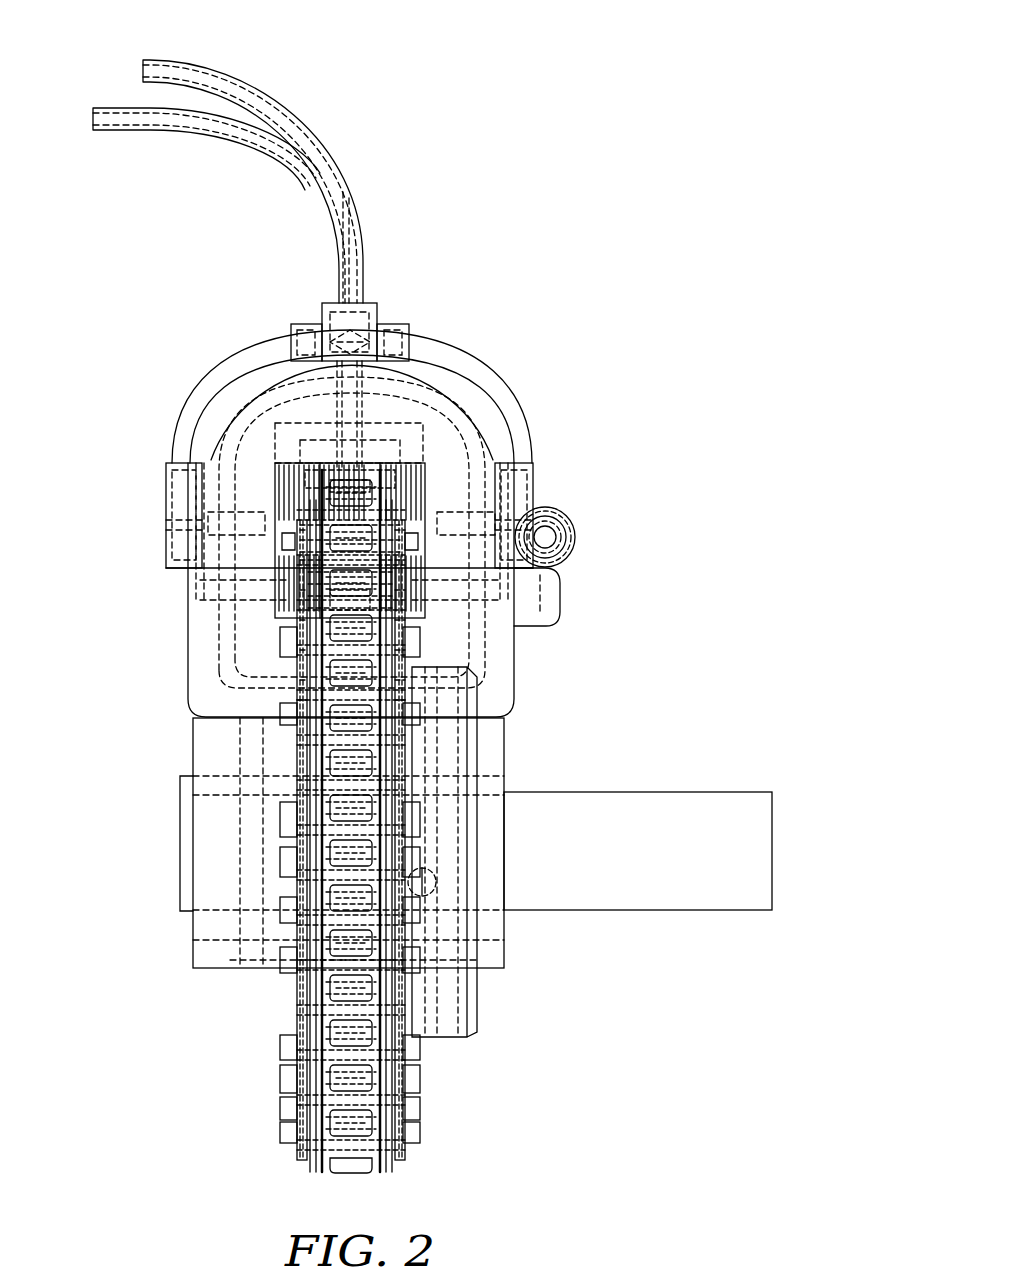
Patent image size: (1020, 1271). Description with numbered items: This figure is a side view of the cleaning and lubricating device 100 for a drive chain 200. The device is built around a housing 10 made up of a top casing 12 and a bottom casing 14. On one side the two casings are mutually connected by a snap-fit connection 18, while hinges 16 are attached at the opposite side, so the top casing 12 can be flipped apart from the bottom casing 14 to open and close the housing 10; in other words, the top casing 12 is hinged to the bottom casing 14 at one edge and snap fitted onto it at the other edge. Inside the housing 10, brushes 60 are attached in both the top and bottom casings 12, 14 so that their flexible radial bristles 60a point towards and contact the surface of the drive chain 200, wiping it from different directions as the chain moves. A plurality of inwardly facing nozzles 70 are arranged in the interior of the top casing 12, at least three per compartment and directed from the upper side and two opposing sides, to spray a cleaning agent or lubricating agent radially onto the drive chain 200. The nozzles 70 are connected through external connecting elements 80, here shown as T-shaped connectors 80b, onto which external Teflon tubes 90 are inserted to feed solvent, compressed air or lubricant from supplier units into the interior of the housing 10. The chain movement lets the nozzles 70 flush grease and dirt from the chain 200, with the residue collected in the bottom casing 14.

The cleaning and lubricating device 100 is at (505, 195).
The external tubes 90 is at (258, 352).
The external connecting elements 80 is at (372, 312).
The T-shaped connector 80b is at (533, 487).
The top casing 12 is at (248, 427).
The snap-fit connection 18 is at (177, 519).
The hinges 16 is at (575, 528).
The housing 10 is at (188, 592).
The nozzles 70 is at (240, 525).
The flexible radial bristles 60a is at (300, 590).
The brushes 60 is at (405, 595).
The bottom casing 14 is at (215, 748).
The drive chain 200 is at (315, 997).